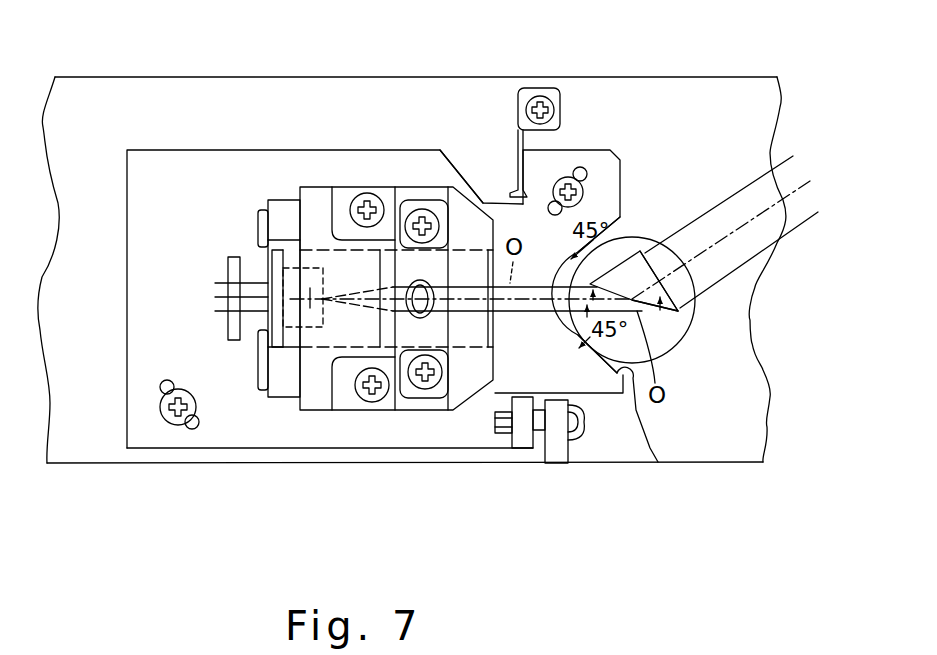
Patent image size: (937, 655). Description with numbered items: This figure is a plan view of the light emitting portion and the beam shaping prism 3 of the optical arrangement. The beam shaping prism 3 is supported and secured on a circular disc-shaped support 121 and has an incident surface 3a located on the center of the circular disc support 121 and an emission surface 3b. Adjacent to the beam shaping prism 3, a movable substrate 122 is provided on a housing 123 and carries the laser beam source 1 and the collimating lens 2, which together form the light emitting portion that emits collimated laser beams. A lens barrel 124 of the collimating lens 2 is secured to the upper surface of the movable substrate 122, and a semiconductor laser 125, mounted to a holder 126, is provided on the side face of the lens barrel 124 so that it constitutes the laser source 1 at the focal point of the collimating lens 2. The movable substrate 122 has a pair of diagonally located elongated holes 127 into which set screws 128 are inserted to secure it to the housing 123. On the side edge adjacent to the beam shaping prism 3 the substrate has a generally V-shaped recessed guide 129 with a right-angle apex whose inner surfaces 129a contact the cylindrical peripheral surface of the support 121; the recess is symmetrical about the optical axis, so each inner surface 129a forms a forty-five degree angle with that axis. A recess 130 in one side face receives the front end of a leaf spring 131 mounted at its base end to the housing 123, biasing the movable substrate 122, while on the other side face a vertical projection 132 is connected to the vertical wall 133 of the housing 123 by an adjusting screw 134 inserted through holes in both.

The laser beam source 1 is at (246, 256).
The semiconductor laser 125 is at (283, 262).
The holder 126 is at (283, 210).
The collimating lens 2 is at (466, 256).
The lens barrel 124 is at (404, 160).
The recess 130 is at (463, 178).
The leaf spring 131 is at (522, 147).
The set screws 128 is at (567, 177).
The elongated holes 127 is at (583, 172).
The recessed guide 129 is at (590, 326).
The inner surfaces 129a is at (597, 247).
The beam shaping prism 3 is at (693, 333).
The incident surface 3a is at (647, 313).
The emission surface 3b is at (678, 242).
The support 121 is at (683, 323).
The movable substrate 122 is at (232, 425).
The housing 123 is at (742, 437).
The vertical projection 132 is at (520, 437).
The vertical wall 133 is at (557, 450).
The adjusting screw 134 is at (580, 427).